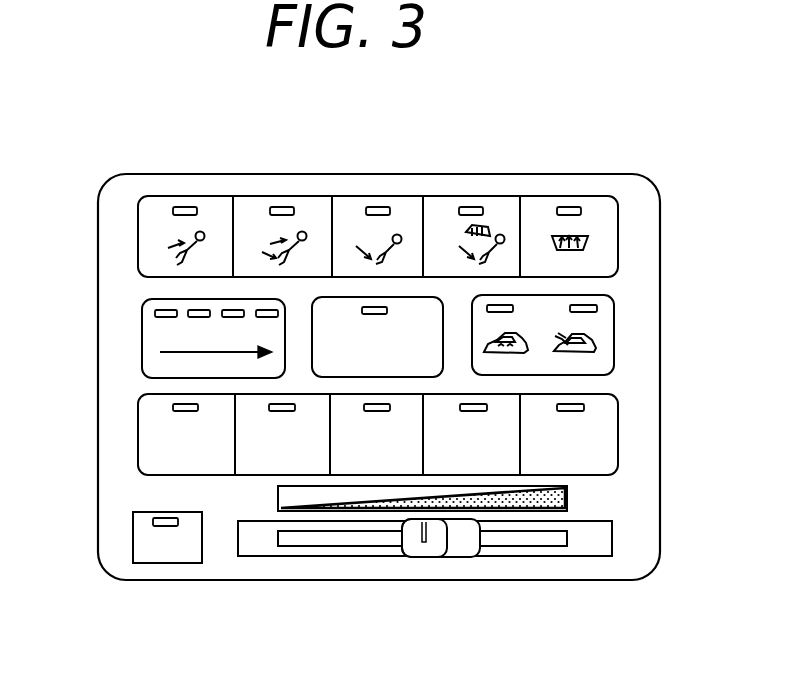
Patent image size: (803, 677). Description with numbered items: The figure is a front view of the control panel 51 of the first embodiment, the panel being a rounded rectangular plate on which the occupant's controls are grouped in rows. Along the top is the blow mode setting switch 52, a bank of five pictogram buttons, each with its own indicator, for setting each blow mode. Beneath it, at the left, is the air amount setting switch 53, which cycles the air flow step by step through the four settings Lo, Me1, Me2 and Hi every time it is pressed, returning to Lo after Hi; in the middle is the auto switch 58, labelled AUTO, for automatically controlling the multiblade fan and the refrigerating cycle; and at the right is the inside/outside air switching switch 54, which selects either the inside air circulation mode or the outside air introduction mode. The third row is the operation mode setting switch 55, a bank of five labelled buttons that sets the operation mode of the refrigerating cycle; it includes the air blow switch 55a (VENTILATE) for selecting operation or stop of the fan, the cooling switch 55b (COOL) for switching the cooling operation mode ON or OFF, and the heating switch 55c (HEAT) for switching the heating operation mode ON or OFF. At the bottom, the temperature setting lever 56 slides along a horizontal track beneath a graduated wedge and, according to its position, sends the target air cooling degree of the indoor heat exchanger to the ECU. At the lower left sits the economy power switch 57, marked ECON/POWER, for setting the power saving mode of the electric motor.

The control panel 51 is at (503, 139).
The blow mode setting switch 52 is at (548, 190).
The air amount setting switch 53 is at (142, 328).
The inside/outside air switching switch 54 is at (614, 323).
The operation mode setting switch 55 is at (424, 497).
The air blow switch 55a is at (218, 477).
The cooling switch 55b is at (264, 477).
The heating switch 55c is at (373, 477).
The temperature setting lever 56 is at (434, 549).
The economy power switch 57 is at (152, 552).
The auto switch 58 is at (343, 297).